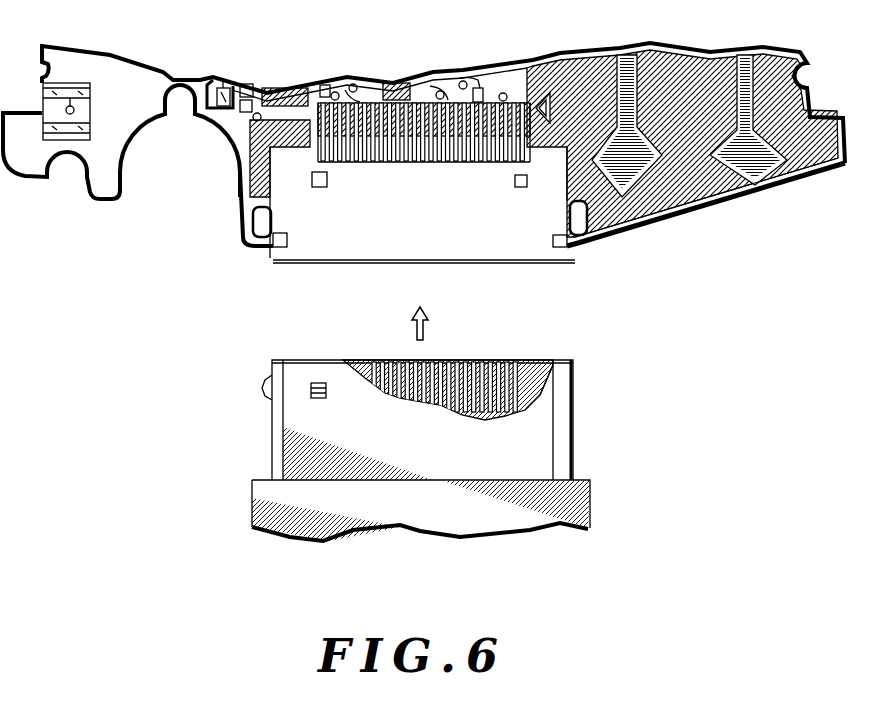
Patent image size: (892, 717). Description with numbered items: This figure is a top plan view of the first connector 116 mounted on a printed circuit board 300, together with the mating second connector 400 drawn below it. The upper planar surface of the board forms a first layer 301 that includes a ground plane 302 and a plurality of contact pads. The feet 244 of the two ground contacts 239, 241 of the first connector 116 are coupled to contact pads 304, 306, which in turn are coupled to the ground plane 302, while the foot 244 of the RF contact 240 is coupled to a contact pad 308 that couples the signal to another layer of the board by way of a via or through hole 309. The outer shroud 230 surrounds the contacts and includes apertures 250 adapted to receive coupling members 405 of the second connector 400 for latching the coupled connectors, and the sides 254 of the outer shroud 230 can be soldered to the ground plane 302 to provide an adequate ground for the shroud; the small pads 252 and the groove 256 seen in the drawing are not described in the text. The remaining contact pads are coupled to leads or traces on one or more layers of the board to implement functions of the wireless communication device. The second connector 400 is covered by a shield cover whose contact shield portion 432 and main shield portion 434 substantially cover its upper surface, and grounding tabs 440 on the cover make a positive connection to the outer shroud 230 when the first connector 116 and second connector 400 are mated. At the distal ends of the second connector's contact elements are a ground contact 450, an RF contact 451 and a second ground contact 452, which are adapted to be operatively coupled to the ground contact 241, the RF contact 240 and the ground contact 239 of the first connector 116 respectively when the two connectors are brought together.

The first connector 116 is at (250, 253).
The outer shroud 230 is at (287, 202).
The ground contact 239 is at (481, 173).
The RF contact 240 is at (497, 173).
The ground contact 241 is at (514, 173).
The feet 244 is at (502, 147).
The apertures 250 is at (285, 244).
The alignment pad 252 is at (313, 172).
The sides 254 is at (252, 135).
The groove 256 is at (613, 162).
The printed circuit board 300 is at (616, 254).
The first layer 301 is at (657, 222).
The ground plane 302 is at (682, 122).
The contact pad 304 is at (490, 150).
The contact pad 306 is at (522, 152).
The contact pad 308 is at (505, 150).
The via or through hole 309 is at (511, 150).
The second connector 400 is at (436, 428).
The coupling members 405 is at (262, 383).
The contact shield portion 432 is at (430, 398).
The main shield portion 434 is at (441, 513).
The grounding tabs 440 is at (320, 383).
The ground contact 450 is at (517, 362).
The RF contact 451 is at (503, 362).
The second ground contact 452 is at (488, 362).